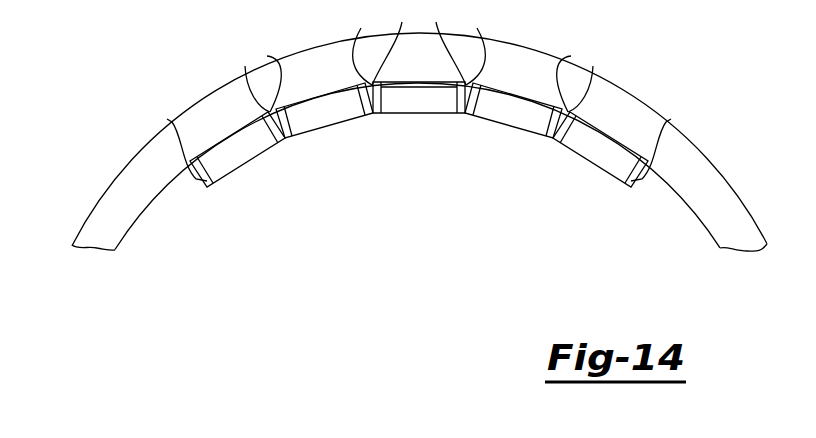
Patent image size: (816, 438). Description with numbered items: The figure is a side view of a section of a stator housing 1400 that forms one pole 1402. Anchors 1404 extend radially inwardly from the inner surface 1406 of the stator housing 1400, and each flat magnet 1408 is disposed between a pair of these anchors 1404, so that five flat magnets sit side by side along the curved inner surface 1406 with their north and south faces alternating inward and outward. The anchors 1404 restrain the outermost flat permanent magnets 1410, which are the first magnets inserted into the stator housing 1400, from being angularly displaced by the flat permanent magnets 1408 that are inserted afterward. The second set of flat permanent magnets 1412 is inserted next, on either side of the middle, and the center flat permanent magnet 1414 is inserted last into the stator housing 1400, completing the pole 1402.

The stator housing 1400 is at (118, 177).
The pole 1402 is at (422, 156).
The anchors 1404 is at (422, 93).
The inner surface 1406 is at (698, 228).
The flat magnet 1408 is at (224, 178).
The outermost flat permanent magnets 1410 is at (583, 168).
The second set of flat permanent magnets 1412 is at (340, 135).
The center flat permanent magnet 1414 is at (419, 124).